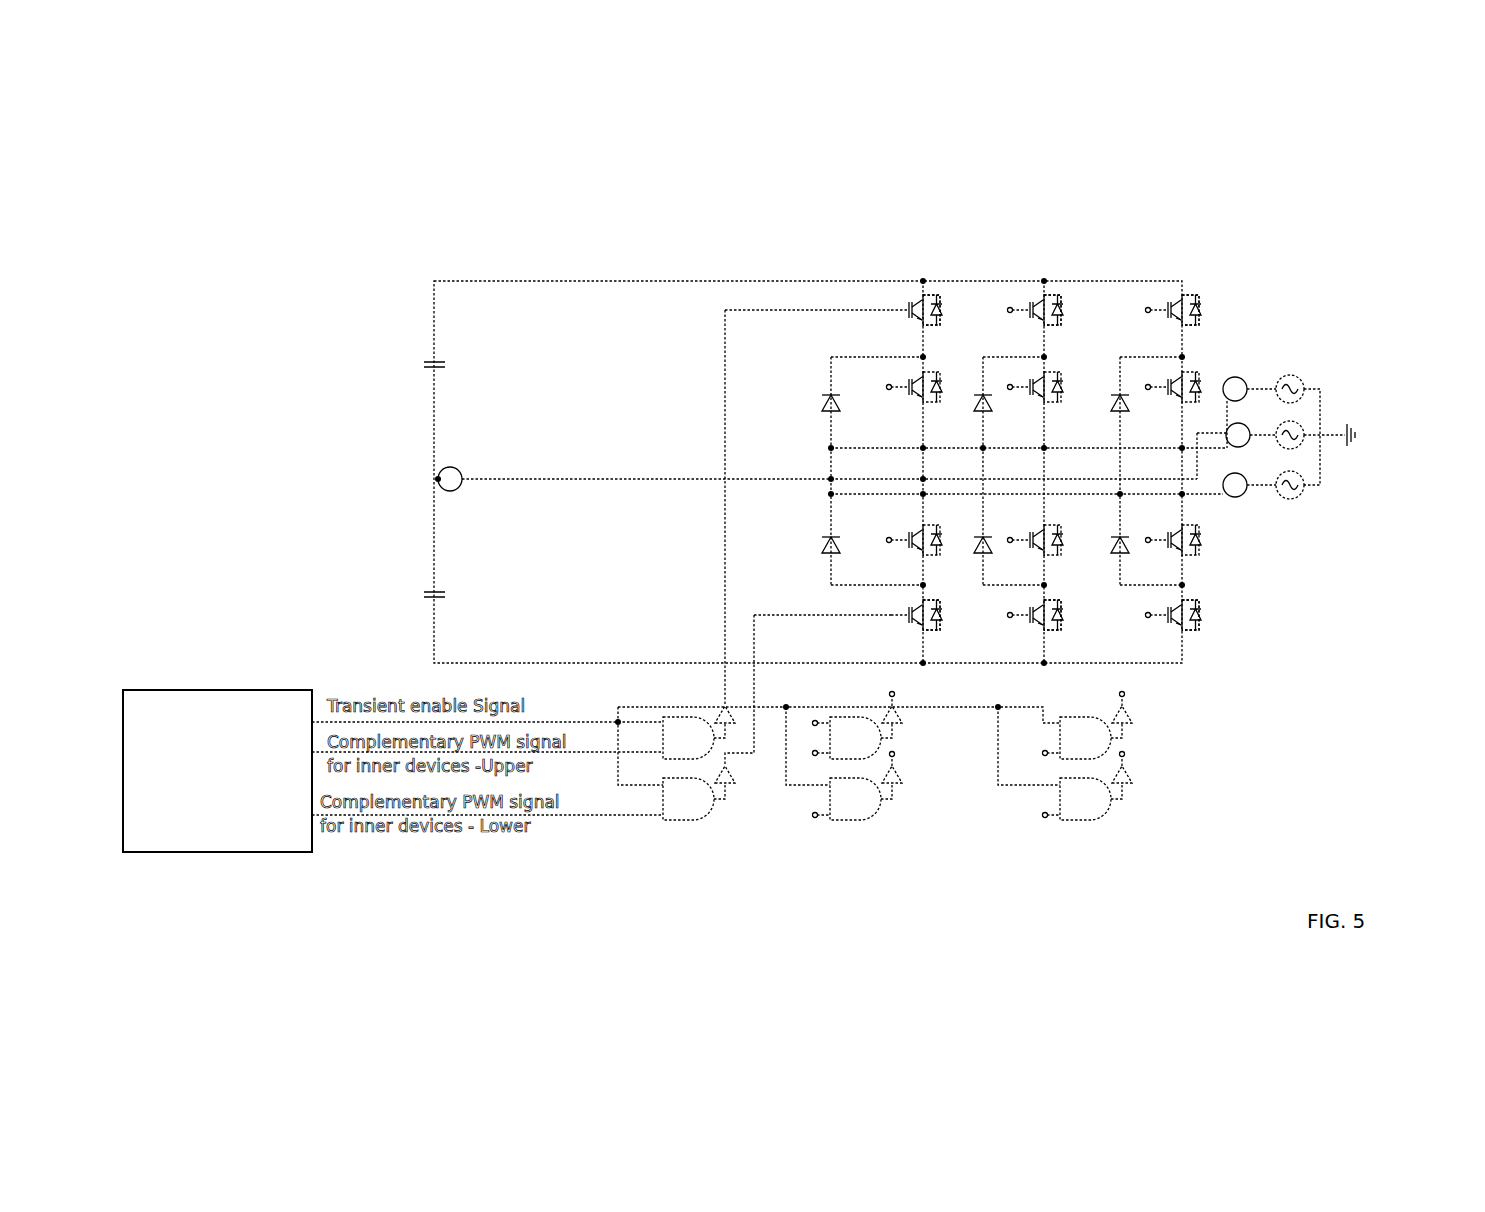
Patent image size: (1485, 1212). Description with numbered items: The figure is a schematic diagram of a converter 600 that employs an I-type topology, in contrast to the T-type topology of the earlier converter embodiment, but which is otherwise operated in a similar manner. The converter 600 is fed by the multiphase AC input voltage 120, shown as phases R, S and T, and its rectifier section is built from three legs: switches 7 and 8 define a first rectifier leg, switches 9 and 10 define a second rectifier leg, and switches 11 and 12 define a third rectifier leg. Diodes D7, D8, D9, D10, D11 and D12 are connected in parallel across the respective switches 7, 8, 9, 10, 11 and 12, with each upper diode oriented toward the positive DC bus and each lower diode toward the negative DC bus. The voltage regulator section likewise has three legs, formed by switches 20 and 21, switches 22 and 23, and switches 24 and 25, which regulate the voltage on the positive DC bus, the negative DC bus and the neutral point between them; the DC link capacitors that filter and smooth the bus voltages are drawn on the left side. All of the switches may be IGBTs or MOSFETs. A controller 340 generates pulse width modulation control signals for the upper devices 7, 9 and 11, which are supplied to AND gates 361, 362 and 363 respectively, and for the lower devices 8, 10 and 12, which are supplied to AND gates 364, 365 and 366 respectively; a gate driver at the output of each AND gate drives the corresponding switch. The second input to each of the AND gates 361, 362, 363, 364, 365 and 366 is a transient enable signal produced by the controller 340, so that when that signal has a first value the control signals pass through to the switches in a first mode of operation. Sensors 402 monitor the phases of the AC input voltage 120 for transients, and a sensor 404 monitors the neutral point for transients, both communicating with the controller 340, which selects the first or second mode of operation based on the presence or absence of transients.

The converter 600 is at (455, 238).
The sensor 404 is at (458, 462).
The sensors 402 is at (1240, 498).
The multiphase AC input voltage 120 is at (1341, 374).
The controller 340 is at (228, 767).
The switch 7 is at (1029, 310).
The switch 8 is at (1029, 615).
The switch 9 is at (914, 317).
The switch 10 is at (912, 627).
The switch 11 is at (1160, 312).
The switch 12 is at (1161, 617).
The switch 20 is at (1036, 531).
The switch 21 is at (1036, 399).
The switch 22 is at (912, 536).
The switch 23 is at (911, 398).
The switch 24 is at (1174, 531).
The switch 25 is at (1174, 398).
The diode D7 is at (1072, 310).
The diode D8 is at (1072, 615).
The diode D9 is at (949, 310).
The diode D10 is at (957, 620).
The diode D11 is at (1214, 310).
The diode D12 is at (1213, 615).
The AND gate 361 is at (858, 726).
The AND gate 362 is at (699, 732).
The AND gate 363 is at (1088, 726).
The AND gate 364 is at (858, 786).
The AND gate 365 is at (699, 793).
The AND gate 366 is at (1088, 786).